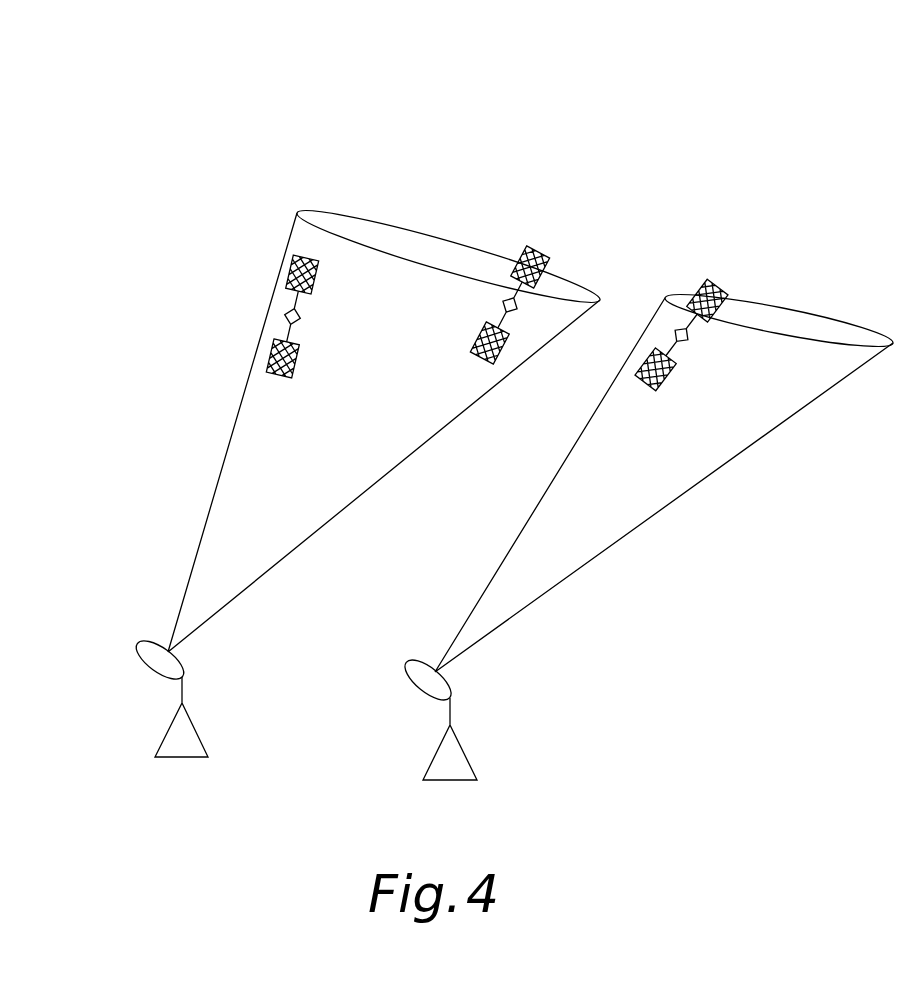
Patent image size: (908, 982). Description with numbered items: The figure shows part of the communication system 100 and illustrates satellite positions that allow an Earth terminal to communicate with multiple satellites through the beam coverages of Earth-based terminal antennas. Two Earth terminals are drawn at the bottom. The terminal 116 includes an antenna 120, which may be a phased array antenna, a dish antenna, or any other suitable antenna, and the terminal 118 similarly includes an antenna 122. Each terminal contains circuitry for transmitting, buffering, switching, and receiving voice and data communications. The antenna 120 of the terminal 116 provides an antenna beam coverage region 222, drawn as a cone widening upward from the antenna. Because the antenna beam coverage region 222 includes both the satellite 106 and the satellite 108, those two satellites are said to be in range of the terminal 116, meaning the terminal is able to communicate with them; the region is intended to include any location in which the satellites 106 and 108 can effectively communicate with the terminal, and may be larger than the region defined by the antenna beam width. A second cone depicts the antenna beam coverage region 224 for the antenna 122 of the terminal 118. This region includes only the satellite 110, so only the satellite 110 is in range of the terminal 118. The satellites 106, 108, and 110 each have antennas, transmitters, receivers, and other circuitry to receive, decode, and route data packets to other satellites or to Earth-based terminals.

The communication system 100 is at (808, 54).
The satellite 106 is at (300, 317).
The satellite 108 is at (515, 312).
The satellite 110 is at (692, 337).
The terminal 116 is at (218, 699).
The terminal 118 is at (511, 723).
The antenna 120 is at (180, 662).
The antenna 122 is at (443, 682).
The antenna beam coverage region 222 is at (220, 468).
The antenna beam coverage region 224 is at (630, 535).